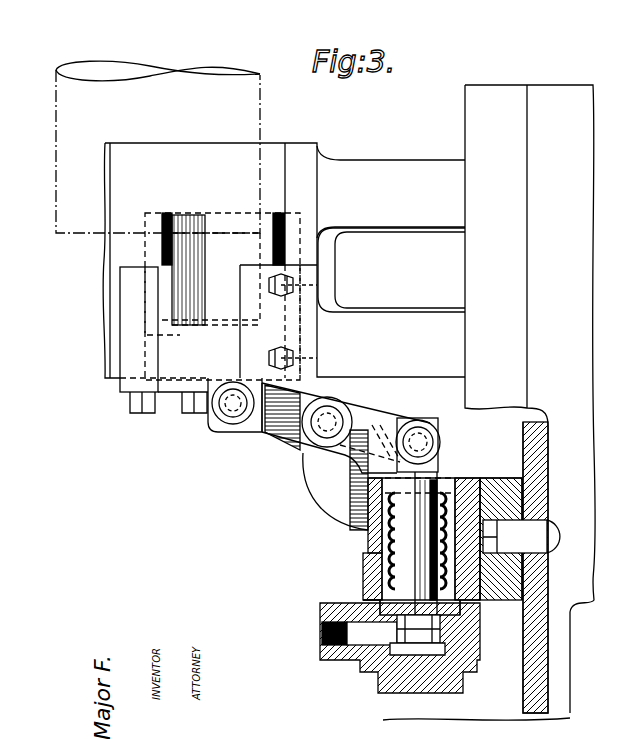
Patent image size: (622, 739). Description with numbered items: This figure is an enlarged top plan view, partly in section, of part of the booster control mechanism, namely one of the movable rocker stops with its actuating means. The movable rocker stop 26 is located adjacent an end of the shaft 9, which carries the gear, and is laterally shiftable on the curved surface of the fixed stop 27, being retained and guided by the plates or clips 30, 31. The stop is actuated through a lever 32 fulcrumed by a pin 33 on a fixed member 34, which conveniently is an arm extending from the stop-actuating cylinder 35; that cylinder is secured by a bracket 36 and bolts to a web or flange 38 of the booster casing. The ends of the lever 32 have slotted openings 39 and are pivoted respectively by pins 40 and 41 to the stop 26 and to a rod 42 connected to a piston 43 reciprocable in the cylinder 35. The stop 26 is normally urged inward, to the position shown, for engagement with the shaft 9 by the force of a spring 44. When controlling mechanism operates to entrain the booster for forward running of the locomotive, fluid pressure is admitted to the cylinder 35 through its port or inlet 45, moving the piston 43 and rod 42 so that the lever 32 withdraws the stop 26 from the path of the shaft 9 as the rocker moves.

The shaft 9 is at (262, 110).
The movable rocker stop 26 is at (150, 250).
The fixed stop 27 is at (275, 187).
The plate or clip 30 is at (164, 340).
The plate or clip 31 is at (278, 321).
The lever 32 is at (280, 435).
The pin 33 is at (340, 410).
The fixed member 34 is at (312, 486).
The stop-actuating cylinder 35 is at (368, 572).
The bracket 36 is at (480, 480).
The web or flange 38 is at (548, 462).
The slotted opening 39 is at (208, 425).
The pin 40 is at (232, 410).
The pin 41 is at (440, 433).
The rod 42 is at (398, 550).
The piston 43 is at (370, 598).
The spring 44 is at (385, 540).
The port or inlet 45 is at (322, 631).